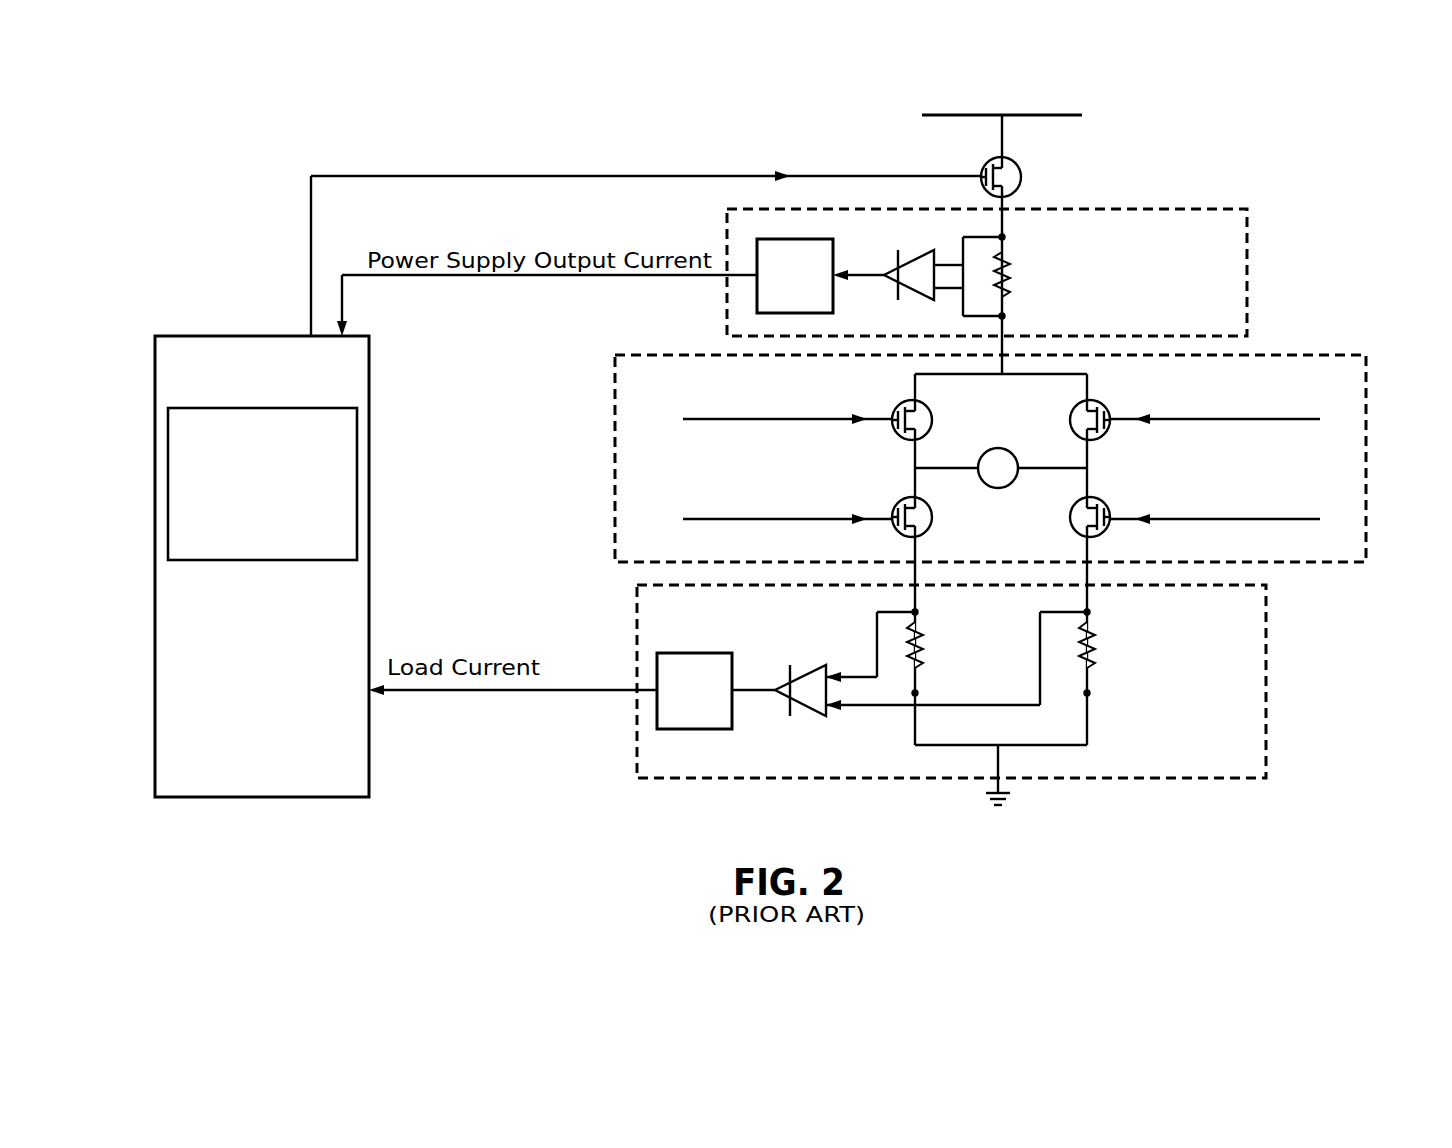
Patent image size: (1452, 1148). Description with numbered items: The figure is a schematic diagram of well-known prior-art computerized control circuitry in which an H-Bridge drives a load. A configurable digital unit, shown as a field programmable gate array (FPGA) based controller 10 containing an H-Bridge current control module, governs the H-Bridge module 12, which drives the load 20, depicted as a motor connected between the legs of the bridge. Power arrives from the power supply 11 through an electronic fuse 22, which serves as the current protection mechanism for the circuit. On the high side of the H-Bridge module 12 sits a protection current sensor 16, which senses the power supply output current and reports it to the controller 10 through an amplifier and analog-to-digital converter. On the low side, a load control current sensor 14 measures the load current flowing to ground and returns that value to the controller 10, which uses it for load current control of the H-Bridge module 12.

The controller 10 is at (200, 334).
The power supply 11 is at (1085, 103).
The H-Bridge module 12 is at (1021, 550).
The load control current sensor 14 is at (1269, 673).
The protection current sensor 16 is at (1250, 284).
The load 20 is at (1000, 446).
The fuse 22 is at (1021, 172).